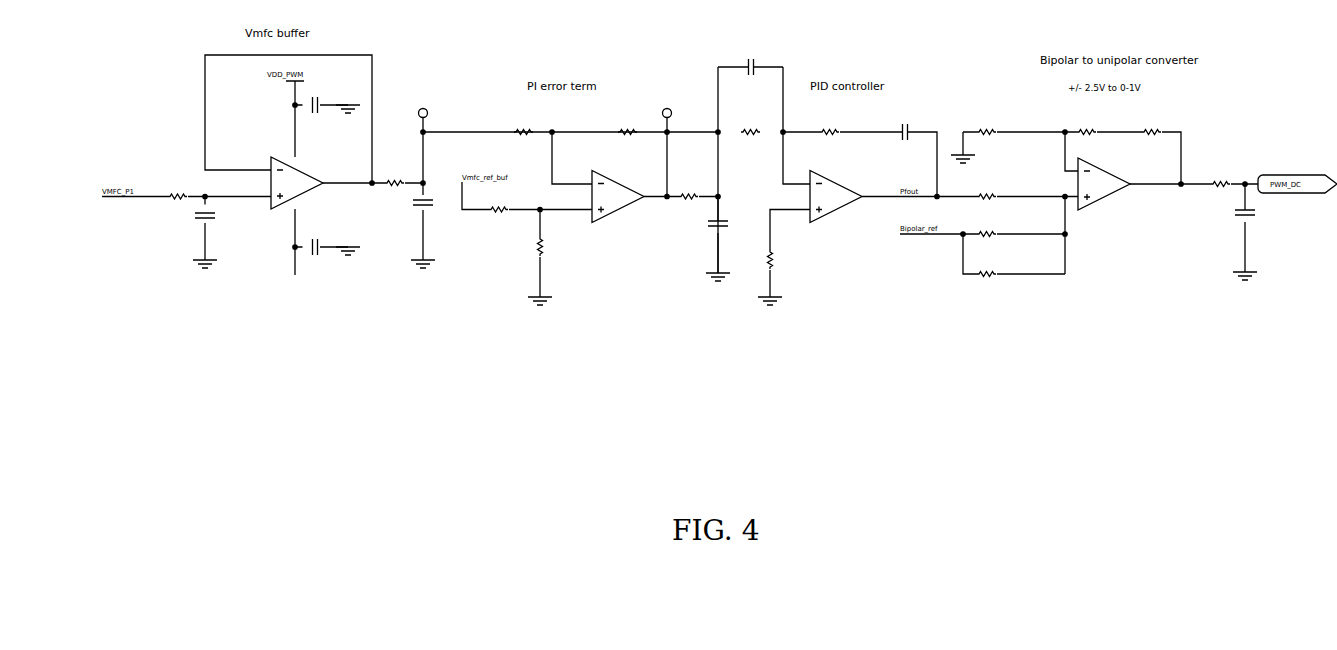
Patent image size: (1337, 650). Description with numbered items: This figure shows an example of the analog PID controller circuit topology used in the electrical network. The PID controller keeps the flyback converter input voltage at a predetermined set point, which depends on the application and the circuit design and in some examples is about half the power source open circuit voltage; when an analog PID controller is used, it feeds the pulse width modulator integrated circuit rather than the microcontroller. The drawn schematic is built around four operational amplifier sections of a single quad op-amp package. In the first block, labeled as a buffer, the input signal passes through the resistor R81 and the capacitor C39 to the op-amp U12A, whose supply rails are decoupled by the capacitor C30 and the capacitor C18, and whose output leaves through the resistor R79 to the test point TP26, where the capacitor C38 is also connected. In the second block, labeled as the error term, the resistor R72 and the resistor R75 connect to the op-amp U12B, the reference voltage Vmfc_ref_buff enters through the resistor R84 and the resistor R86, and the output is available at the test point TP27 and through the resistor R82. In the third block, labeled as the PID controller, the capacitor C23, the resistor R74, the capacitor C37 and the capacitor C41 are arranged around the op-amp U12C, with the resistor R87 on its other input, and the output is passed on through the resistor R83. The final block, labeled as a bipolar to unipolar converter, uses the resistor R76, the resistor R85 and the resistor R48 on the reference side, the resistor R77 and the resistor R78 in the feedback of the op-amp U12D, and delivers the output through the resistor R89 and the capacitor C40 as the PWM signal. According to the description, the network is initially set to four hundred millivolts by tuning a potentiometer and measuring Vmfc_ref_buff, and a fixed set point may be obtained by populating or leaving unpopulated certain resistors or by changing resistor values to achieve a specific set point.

The input resistor R81 is at (177, 196).
The input capacitor C39 is at (213, 241).
The Vmfc buffer op-amp U12A is at (310, 178).
The VDD decoupling capacitor C30 is at (327, 114).
The VSS decoupling capacitor C18 is at (322, 256).
The buffer output resistor R79 is at (397, 184).
The test point TP26 is at (420, 108).
The capacitor (DNP) C38 is at (430, 234).
The PI input resistor R72 is at (522, 134).
The feedback resistor R75 is at (728, 134).
The reference input resistor R84 is at (498, 211).
The reference divider resistor R86 is at (545, 267).
The PI error term op-amp U12B is at (618, 203).
The test point TP27 is at (663, 108).
The series resistor R82 is at (688, 198).
The PID capacitor (DNP) C23 is at (751, 76).
The PID input resistor R74 is at (750, 134).
The PID feedback capacitor C37 is at (905, 140).
The PID capacitor (DNP) C41 is at (725, 249).
The PID controller op-amp U12C is at (839, 197).
The PID bias resistor R87 is at (773, 287).
The converter input resistor R83 is at (986, 198).
The converter ground resistor R76 is at (1007, 150).
The bipolar reference resistor R85 is at (986, 237).
The resistor (DNP) R48 is at (1014, 259).
The converter feedback resistor R77 is at (1086, 134).
The converter feedback resistor R78 is at (1151, 134).
The bipolar to unipolar converter op-amp U12D is at (1107, 184).
The output resistor R89 is at (1218, 185).
The output filter capacitor C40 is at (1252, 240).